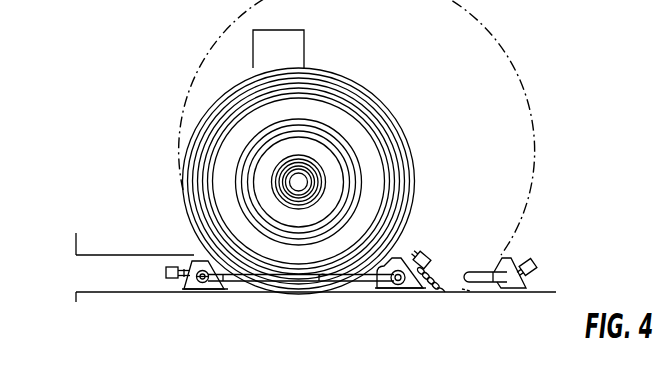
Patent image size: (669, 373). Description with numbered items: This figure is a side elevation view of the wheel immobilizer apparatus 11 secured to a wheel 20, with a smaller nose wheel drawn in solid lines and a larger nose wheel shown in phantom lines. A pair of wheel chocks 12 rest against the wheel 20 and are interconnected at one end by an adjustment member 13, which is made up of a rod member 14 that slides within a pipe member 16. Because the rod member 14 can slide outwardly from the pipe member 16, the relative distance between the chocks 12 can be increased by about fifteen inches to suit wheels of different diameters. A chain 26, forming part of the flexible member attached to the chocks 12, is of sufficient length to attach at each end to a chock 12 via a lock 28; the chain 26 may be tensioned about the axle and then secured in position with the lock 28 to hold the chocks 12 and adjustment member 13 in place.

The tire securing apparatus 11 is at (183, 5).
The wheel chock 12 is at (172, 285).
The adjustment member 13 is at (287, 286).
The rod member 14 is at (222, 291).
The pipe member 16 is at (321, 277).
The wheel 20 is at (373, 90).
The chain 26 is at (447, 293).
The lock 28 is at (168, 271).